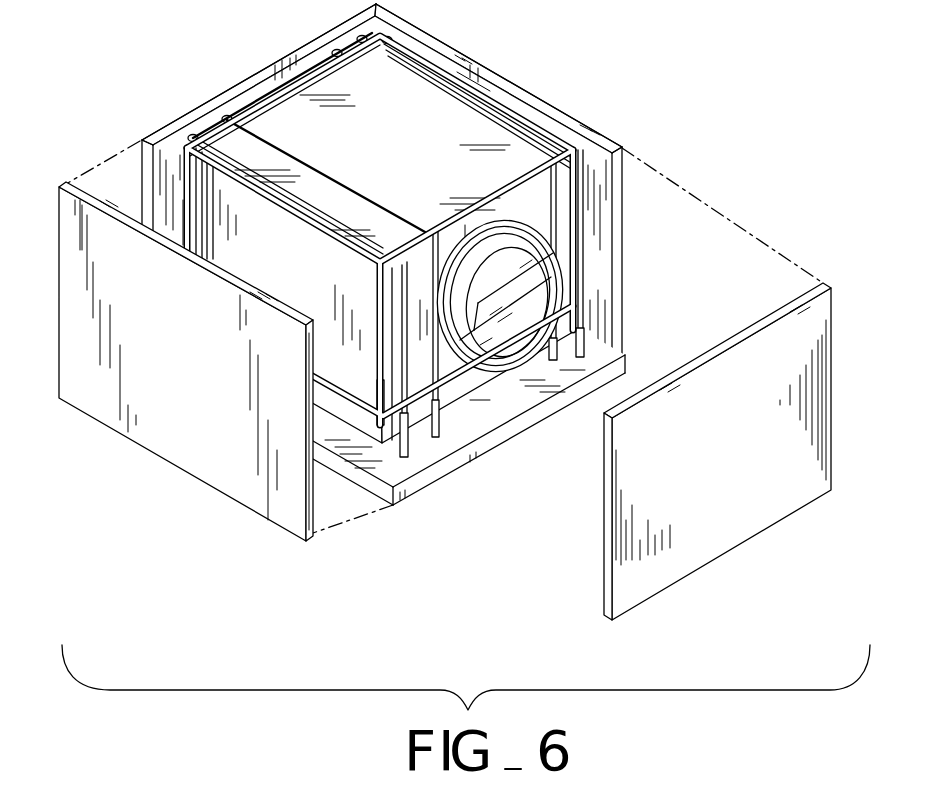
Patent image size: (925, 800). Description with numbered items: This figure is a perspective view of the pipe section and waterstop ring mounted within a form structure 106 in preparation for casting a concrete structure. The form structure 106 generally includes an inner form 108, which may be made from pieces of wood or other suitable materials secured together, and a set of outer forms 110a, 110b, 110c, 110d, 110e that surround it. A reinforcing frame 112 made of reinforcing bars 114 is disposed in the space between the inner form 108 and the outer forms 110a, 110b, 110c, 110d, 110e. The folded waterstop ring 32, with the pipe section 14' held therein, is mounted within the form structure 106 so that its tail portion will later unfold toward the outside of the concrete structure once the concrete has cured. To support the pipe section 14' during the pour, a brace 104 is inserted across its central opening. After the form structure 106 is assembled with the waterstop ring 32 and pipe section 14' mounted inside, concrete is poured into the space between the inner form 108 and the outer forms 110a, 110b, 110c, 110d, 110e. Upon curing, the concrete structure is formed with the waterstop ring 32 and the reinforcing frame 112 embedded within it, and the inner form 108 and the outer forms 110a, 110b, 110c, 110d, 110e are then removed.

The form structure 106 is at (688, 125).
The inner form 108 is at (311, 125).
The reinforcing frame 112 is at (424, 222).
The reinforcing bars 114 is at (317, 171).
The waterstop ring 32 is at (519, 220).
The brace 104 is at (495, 296).
The pipe section 14' is at (500, 342).
The outer form 110a is at (750, 456).
The outer form 110b is at (224, 399).
The outer form 110c is at (618, 256).
The outer form 110d is at (255, 74).
The outer form 110e is at (411, 492).